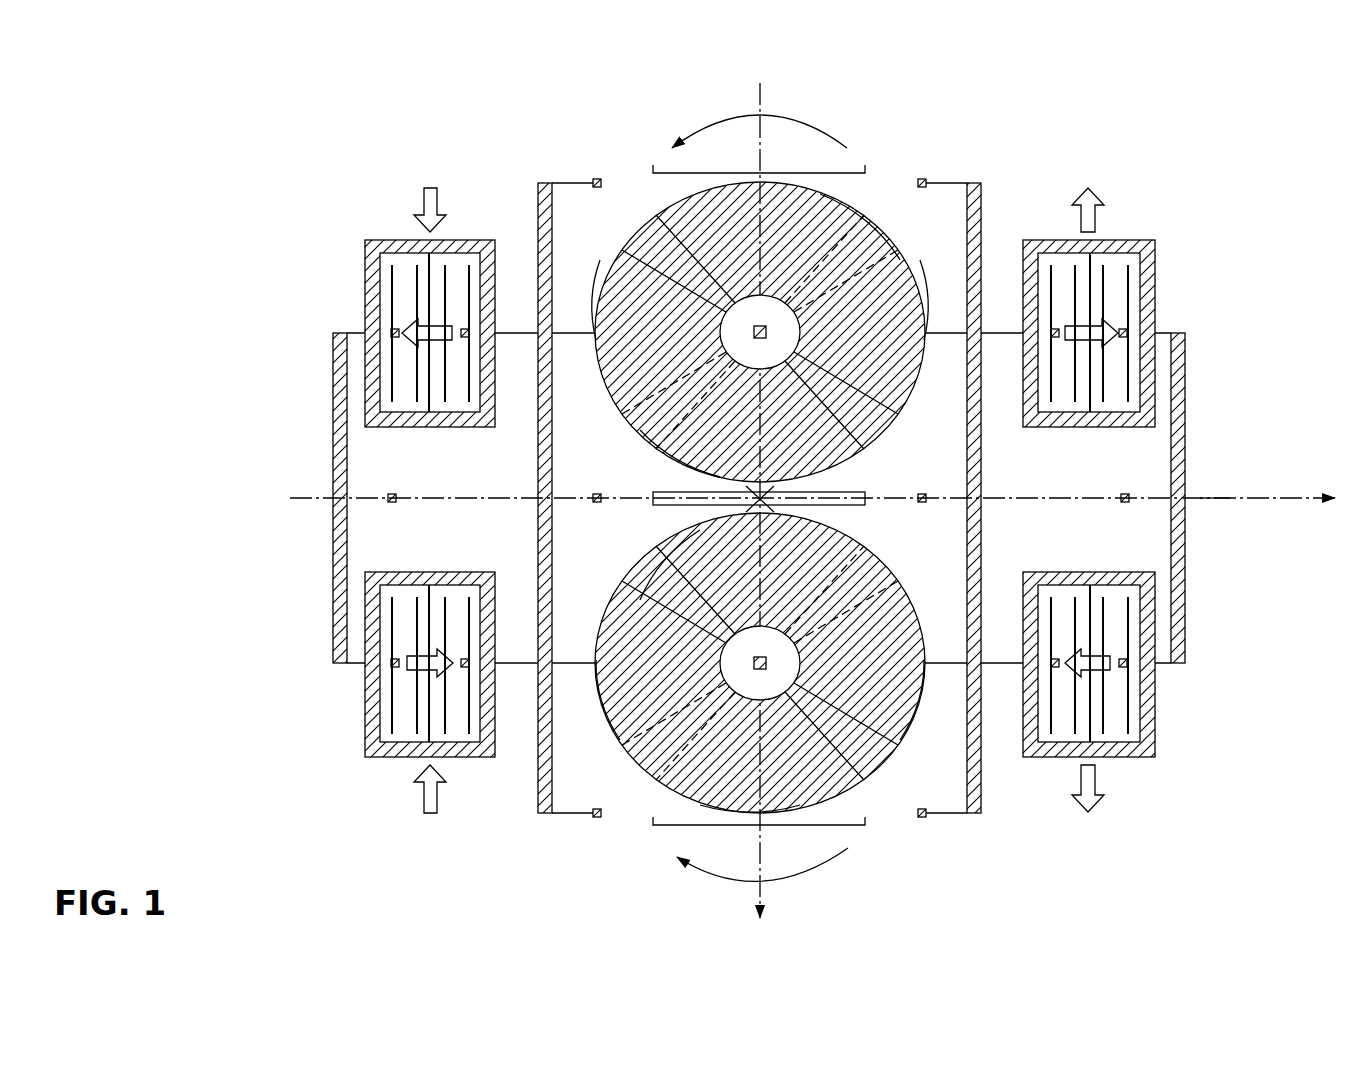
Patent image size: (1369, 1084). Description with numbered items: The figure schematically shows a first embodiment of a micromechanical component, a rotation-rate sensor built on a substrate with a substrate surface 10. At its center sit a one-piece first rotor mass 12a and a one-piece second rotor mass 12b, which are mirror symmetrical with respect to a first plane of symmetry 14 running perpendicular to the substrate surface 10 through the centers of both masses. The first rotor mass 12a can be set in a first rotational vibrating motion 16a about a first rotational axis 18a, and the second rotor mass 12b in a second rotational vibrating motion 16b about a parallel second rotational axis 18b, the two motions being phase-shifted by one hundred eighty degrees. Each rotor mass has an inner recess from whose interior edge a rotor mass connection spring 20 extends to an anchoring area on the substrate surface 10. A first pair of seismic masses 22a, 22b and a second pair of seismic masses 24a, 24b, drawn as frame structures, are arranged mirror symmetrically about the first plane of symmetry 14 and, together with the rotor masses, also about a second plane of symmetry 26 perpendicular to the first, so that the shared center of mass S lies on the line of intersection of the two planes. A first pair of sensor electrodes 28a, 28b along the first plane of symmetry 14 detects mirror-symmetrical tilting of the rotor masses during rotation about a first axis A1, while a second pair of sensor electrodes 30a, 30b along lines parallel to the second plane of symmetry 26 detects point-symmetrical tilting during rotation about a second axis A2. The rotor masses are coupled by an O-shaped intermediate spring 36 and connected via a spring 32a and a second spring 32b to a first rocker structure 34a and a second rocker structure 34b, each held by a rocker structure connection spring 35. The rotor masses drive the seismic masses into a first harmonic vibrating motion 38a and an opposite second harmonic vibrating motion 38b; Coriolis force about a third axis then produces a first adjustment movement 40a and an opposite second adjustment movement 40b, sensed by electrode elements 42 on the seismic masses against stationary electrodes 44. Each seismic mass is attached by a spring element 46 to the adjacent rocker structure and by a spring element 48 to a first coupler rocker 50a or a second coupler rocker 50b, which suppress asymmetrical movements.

The substrate surface 10 is at (1253, 384).
The first rotor mass 12a is at (770, 236).
The second rotor mass 12b is at (770, 777).
The first plane of symmetry 14 is at (762, 835).
The first rotational vibrating motion 16a is at (803, 122).
The second rotational vibrating motion 16b is at (788, 880).
The first rotational axis 18a is at (770, 338).
The second rotational axis 18b is at (772, 668).
The rotor mass connection spring 20 is at (750, 322).
The first seismic mass of the first pair 22a is at (375, 240).
The second seismic mass of the first pair 22b is at (1145, 240).
The first seismic mass of the second pair 24a is at (375, 758).
The second seismic mass of the second pair 24b is at (1145, 758).
The second plane of symmetry 26 is at (1213, 498).
The sensor electrode of the first pair 28a is at (845, 199).
The sensor electrode of the first pair 28b is at (688, 469).
The sensor electrode of the second pair 30a is at (601, 279).
The sensor electrode of the second pair 30b is at (922, 273).
The spring 32a is at (575, 337).
The second spring 32b is at (950, 657).
The first rocker structure 34a is at (540, 527).
The second rocker structure 34b is at (978, 470).
The rocker structure connection spring 35 is at (600, 180).
The intermediate spring 36 is at (868, 497).
The first harmonic vibrating motion 38a is at (430, 185).
The second harmonic vibrating motion 38b is at (430, 814).
The first adjustment movement 40a is at (440, 340).
The second adjustment movement 40b is at (405, 665).
The electrode element 42 is at (378, 278).
The stationary electrode 44 is at (470, 290).
The spring element 46 is at (522, 337).
The spring element 48 is at (350, 333).
The first coupler rocker 50a is at (337, 420).
The second coupler rocker 50b is at (1183, 558).
The shared center of mass S is at (768, 503).
The first axis A1 is at (758, 905).
The second axis A2 is at (1290, 498).